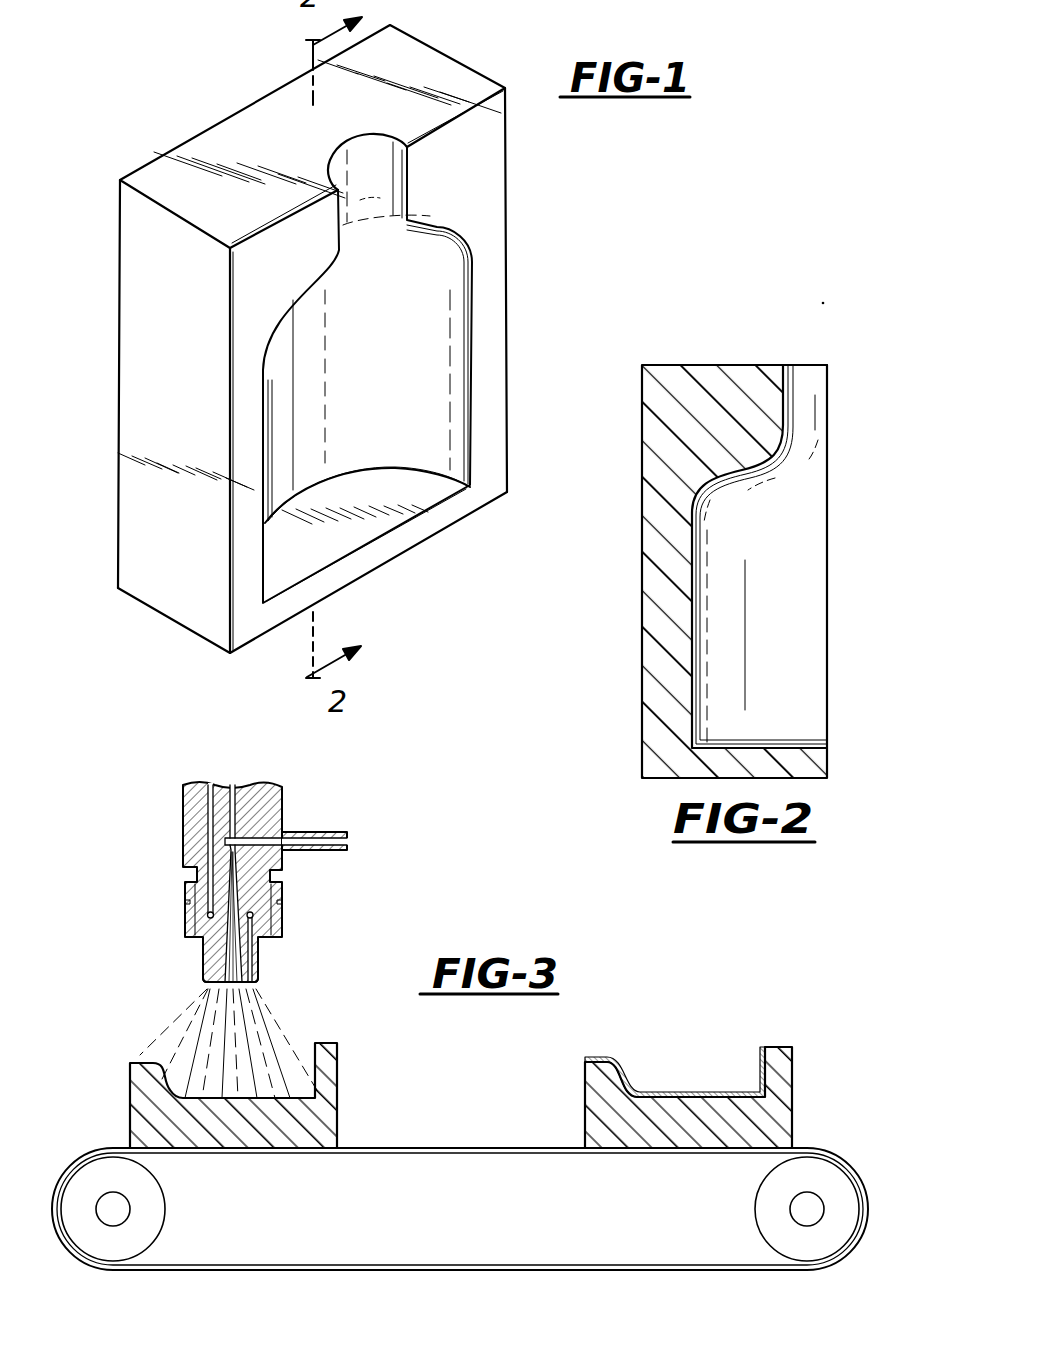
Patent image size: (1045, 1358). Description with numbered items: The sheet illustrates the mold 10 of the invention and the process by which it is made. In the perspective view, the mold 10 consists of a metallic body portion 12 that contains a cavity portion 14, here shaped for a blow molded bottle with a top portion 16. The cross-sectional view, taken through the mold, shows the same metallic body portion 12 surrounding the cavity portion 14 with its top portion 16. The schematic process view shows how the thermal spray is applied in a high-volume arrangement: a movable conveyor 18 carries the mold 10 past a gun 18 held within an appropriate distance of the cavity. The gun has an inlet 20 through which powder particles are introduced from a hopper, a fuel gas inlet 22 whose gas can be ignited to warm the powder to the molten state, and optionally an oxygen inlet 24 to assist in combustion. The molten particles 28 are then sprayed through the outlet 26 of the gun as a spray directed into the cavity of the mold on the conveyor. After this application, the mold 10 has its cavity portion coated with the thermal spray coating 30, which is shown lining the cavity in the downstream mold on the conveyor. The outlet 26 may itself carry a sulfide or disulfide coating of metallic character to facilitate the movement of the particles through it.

In FIG. 1, the mold 10 is at (180, 92).
In FIG. 1, the metallic body portion 12 is at (147, 346).
In FIG. 2, the metallic body portion 12 is at (703, 365).
In FIG. 3, the metallic body portion 12 is at (130, 1113).
In FIG. 1, the cavity portion 14 is at (405, 328).
In FIG. 2, the cavity portion 14 is at (689, 576).
In FIG. 3, the cavity portion 14 is at (768, 1072).
In FIG. 1, the top portion 16 is at (383, 165).
In FIG. 2, the top portion 16 is at (813, 410).
In FIG. 3, the top portion 16 is at (230, 1270).
In FIG. 3, the movable conveyor / gun 18 is at (170, 845).
In FIG. 3, the inlet 20 is at (347, 843).
In FIG. 3, the fuel gas inlet 22 is at (236, 782).
In FIG. 3, the oxygen inlet 24 is at (208, 785).
In FIG. 3, the outlet 26 is at (247, 977).
In FIG. 3, the particles 28 is at (199, 1027).
In FIG. 3, the thermal spray coating 30 is at (755, 1066).